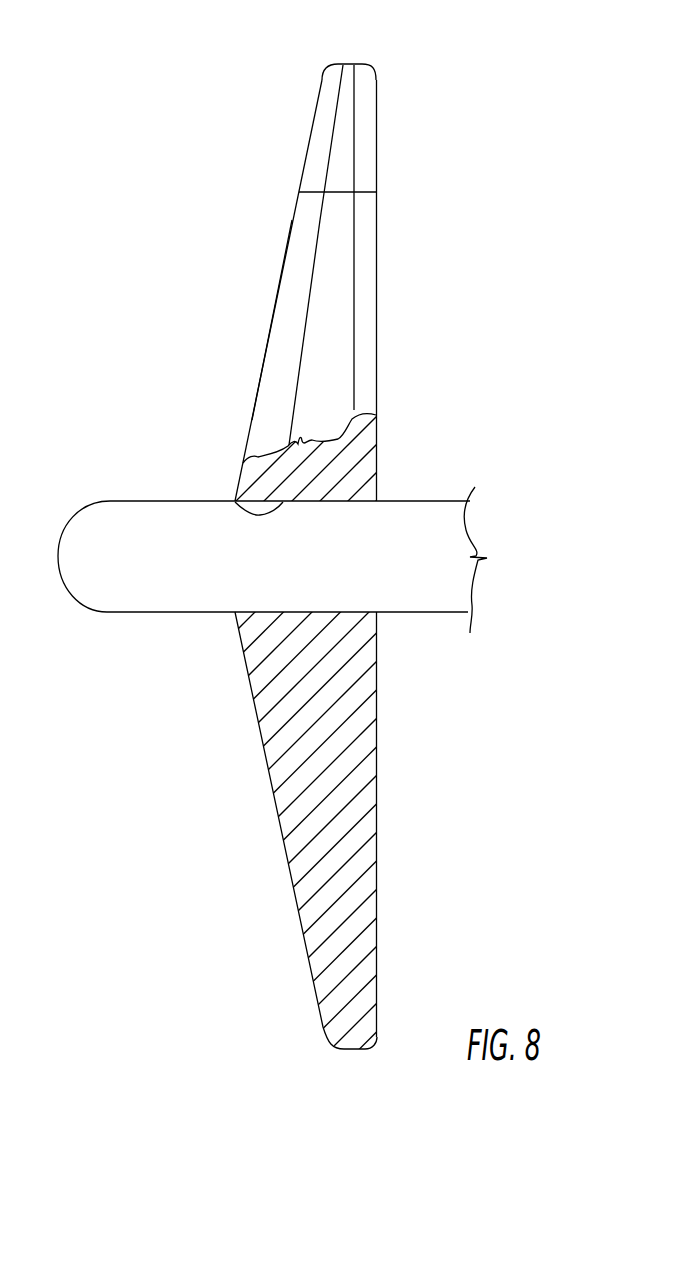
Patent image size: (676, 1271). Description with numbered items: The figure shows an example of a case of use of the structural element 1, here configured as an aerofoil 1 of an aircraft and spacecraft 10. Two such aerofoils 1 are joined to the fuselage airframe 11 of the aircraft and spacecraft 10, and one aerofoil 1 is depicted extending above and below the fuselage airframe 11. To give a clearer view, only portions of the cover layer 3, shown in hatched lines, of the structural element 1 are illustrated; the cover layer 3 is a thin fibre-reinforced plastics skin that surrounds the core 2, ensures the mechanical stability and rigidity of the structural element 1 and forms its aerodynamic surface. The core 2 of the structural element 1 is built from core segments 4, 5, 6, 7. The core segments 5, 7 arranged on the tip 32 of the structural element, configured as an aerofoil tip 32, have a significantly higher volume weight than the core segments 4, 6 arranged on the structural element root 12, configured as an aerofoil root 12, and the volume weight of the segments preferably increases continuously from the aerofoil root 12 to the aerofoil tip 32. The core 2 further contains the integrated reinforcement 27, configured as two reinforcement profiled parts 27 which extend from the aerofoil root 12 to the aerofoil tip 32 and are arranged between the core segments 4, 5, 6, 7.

The structural element 1 is at (236, 475).
The core 2 is at (388, 294).
The cover layer 3 is at (367, 462).
The core segment 4 is at (290, 368).
The core segment 5 is at (315, 178).
The core segment 6 is at (330, 327).
The core segment 7 is at (342, 165).
The aircraft and spacecraft 10 is at (122, 916).
The fuselage airframe 11 is at (150, 600).
The aerofoil root 12 is at (235, 502).
The reinforcement profiled part 27 is at (312, 272).
The aerofoil tip 32 is at (333, 62).